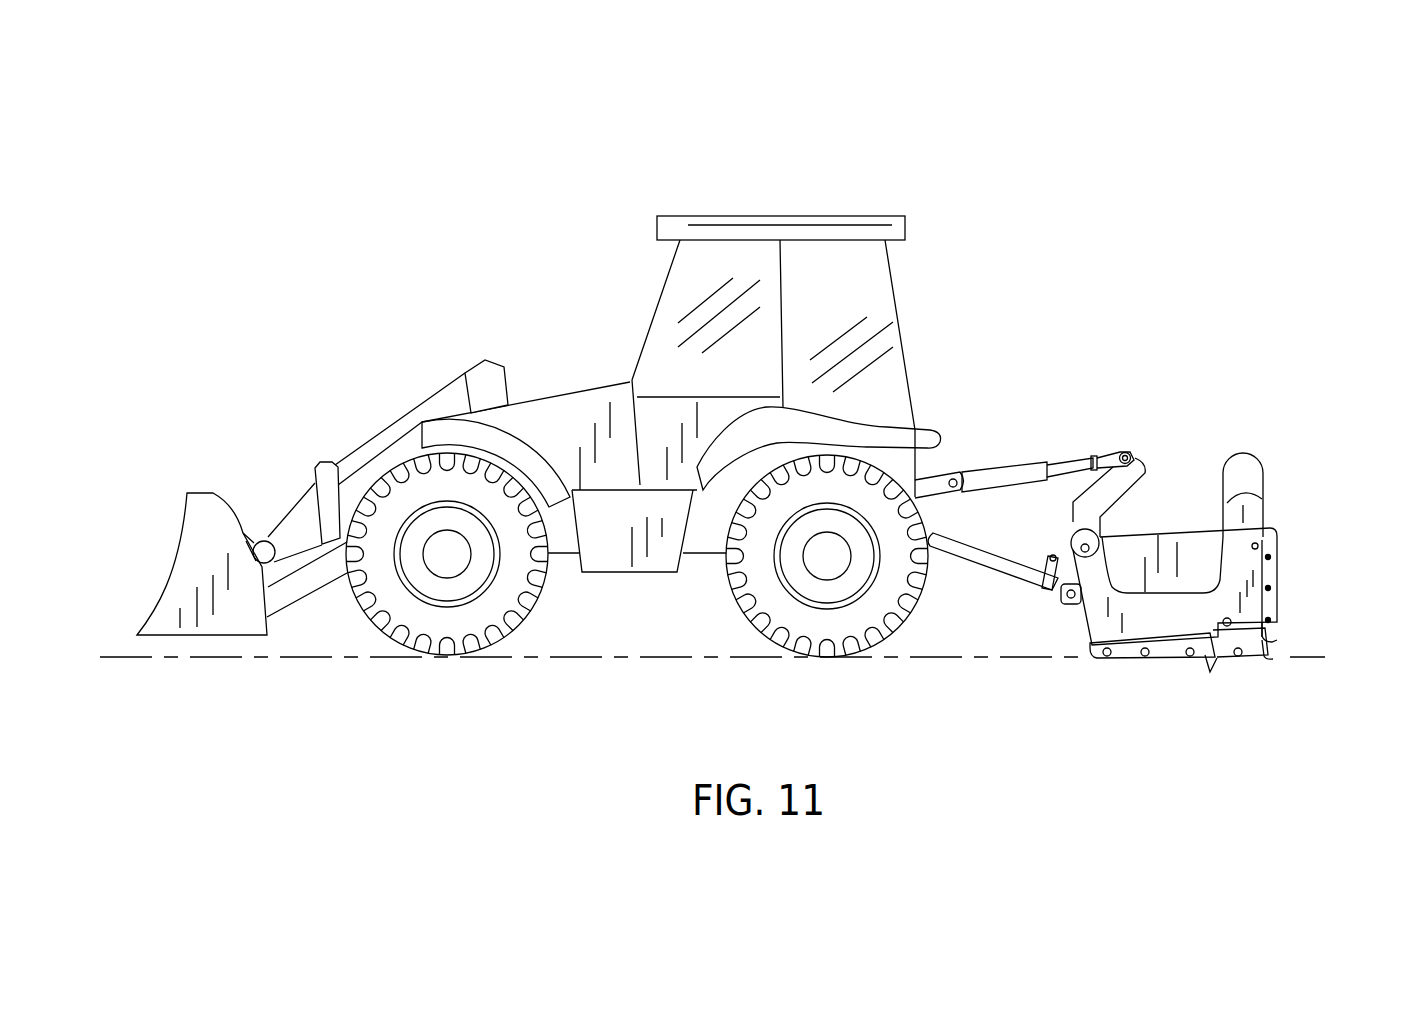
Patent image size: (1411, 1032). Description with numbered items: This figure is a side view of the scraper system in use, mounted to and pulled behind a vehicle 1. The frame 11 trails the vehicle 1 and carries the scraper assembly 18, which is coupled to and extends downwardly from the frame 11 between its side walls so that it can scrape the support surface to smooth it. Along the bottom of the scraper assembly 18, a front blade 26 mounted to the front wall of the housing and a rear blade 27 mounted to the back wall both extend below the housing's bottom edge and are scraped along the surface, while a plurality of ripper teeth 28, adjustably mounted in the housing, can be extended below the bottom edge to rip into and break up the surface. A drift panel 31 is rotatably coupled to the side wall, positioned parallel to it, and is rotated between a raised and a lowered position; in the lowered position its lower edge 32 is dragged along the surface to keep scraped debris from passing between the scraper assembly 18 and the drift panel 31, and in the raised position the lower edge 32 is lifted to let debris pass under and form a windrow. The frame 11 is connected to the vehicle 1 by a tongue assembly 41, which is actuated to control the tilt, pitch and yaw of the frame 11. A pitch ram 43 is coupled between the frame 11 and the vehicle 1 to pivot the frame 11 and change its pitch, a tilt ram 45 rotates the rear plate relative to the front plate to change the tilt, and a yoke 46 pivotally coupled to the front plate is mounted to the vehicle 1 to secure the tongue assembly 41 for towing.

The vehicle 1 is at (563, 405).
The frame 11 is at (1223, 595).
The scraper assembly 18 is at (1257, 473).
The front blade 26 is at (1213, 652).
The rear blade 27 is at (1273, 658).
The ripper teeth 28 is at (1213, 665).
The drift panels 31 is at (1093, 627).
The lower edge 32 is at (1137, 658).
The tongue assembly 41 is at (1047, 600).
The pitch ram 43 is at (990, 477).
The tilt ram 45 is at (1048, 553).
The yoke 46 is at (977, 565).